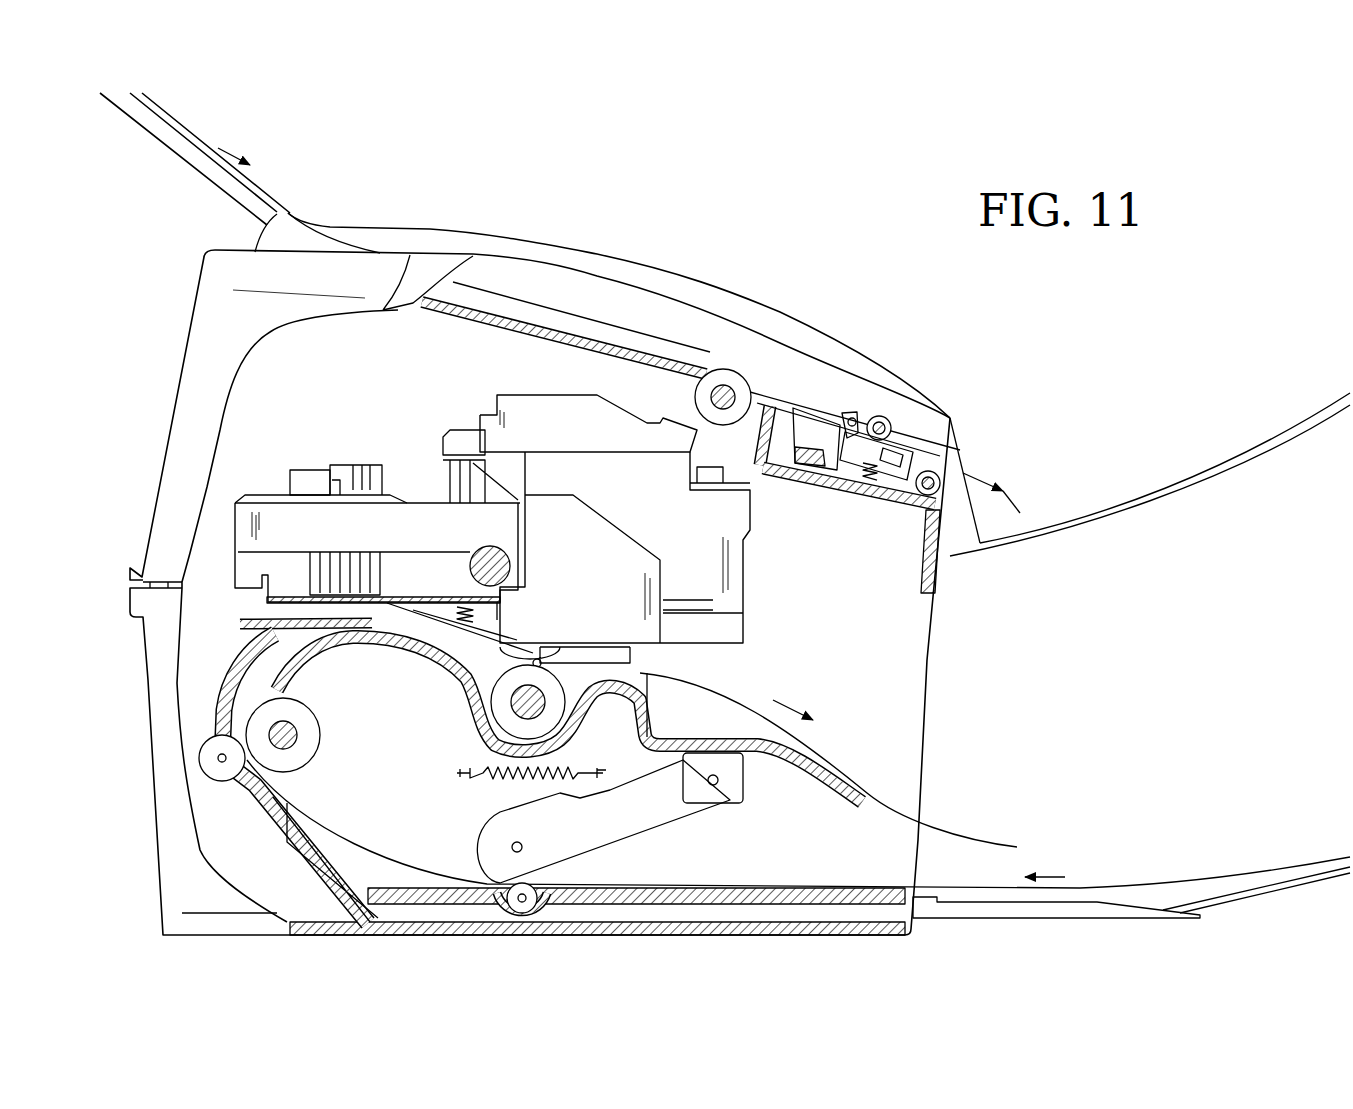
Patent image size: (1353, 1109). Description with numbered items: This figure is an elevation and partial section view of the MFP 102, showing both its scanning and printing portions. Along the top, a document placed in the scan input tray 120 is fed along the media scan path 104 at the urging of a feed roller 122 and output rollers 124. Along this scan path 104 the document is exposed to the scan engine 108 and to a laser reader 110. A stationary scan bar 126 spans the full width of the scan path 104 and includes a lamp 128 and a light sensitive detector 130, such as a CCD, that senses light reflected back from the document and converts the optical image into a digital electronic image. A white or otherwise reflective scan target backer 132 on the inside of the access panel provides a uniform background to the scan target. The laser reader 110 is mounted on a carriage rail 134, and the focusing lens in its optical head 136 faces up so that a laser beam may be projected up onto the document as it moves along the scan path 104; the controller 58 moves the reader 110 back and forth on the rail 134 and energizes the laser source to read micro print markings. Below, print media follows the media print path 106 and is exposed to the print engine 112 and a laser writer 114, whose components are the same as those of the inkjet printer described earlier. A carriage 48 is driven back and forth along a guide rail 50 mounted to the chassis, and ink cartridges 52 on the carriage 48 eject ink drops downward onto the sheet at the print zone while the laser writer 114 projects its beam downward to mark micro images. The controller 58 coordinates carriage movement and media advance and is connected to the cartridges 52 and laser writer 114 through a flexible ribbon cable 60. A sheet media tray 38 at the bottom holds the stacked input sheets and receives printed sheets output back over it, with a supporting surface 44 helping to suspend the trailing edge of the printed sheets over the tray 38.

The sheet media tray 38 is at (1203, 915).
The supporting surface 44 is at (810, 770).
The carriage 48 is at (430, 517).
The guide rail 50 is at (493, 553).
The ink cartridges 52 is at (737, 633).
The controller 58 is at (300, 470).
The flexible ribbon cable 60 is at (368, 465).
The MFP 102 is at (641, 192).
The media scan path 104 is at (622, 318).
The media print path 106 is at (345, 829).
The scan engine 108 is at (857, 470).
The laser reader 110 is at (782, 470).
The print engine 112 is at (758, 657).
The laser writer 114 is at (610, 547).
The scan input tray 120 is at (170, 141).
The feed roller 122 is at (696, 397).
The output rollers 124 is at (877, 417).
The scan bar 126 is at (897, 470).
The lamp 128 is at (907, 457).
The light sensitive detector 130 is at (952, 418).
The scan target backer 132 is at (748, 333).
The carriage rail 134 is at (820, 473).
The optical head 136 is at (825, 413).